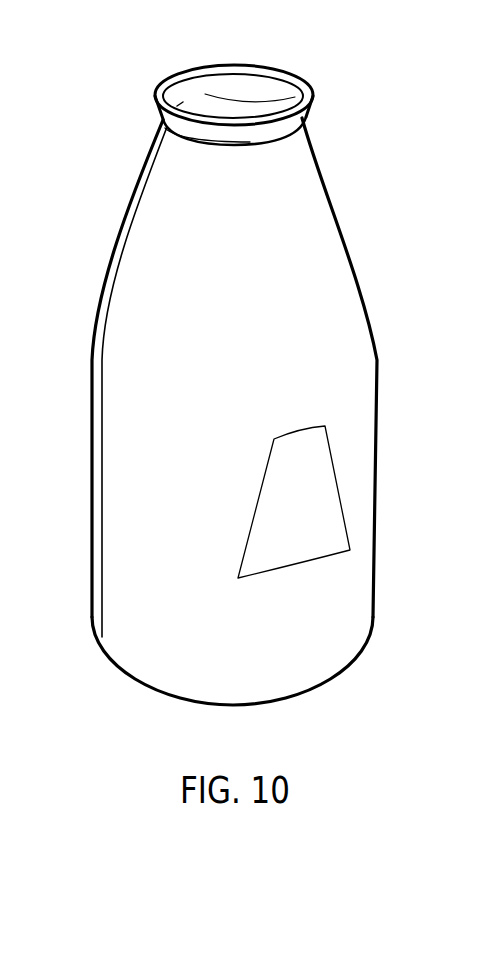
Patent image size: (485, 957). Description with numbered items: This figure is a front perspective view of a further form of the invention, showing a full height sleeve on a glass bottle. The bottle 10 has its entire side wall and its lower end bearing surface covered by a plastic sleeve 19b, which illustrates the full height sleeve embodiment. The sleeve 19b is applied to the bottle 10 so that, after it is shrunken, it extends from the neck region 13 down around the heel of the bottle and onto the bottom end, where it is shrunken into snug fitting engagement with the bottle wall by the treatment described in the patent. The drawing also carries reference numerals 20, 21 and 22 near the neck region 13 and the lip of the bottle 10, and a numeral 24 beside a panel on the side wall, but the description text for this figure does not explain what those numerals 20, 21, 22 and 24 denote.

The bottle 10 is at (230, 372).
The neck region 13 is at (303, 118).
The plastic sleeve 19b is at (143, 425).
The label layer / wall line 20 is at (102, 342).
The band highlight line 21 is at (181, 135).
The lower lip band 22 is at (230, 142).
The label panel 24 is at (328, 562).